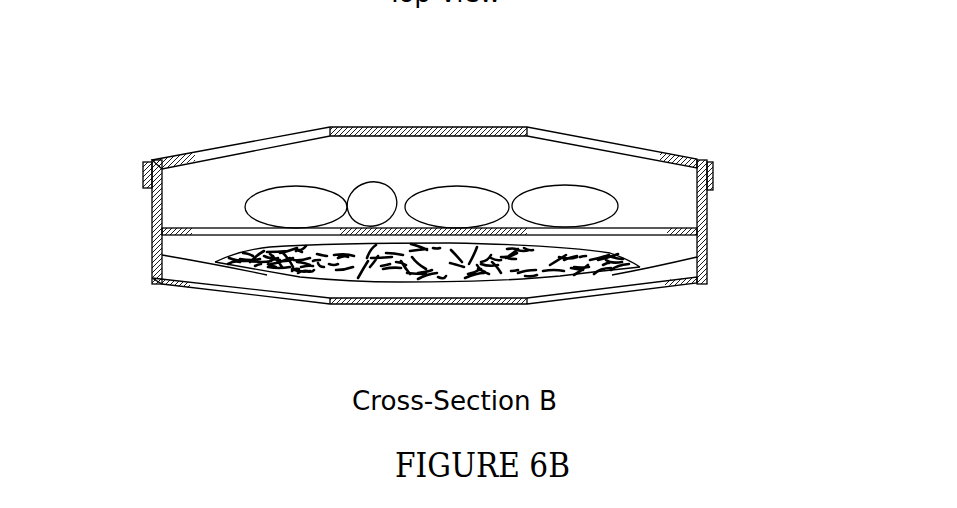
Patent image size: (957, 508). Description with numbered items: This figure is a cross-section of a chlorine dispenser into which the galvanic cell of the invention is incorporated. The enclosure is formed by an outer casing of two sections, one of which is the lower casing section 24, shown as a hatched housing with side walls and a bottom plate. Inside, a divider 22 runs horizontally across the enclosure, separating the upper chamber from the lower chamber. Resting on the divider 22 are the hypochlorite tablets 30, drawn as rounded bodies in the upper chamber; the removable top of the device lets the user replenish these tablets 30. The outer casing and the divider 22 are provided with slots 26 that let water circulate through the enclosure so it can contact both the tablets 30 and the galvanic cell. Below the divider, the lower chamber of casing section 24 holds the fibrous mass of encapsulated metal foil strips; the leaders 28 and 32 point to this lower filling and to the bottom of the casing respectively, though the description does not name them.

The divider 22 is at (510, 227).
The outer casing section 24 is at (690, 258).
The slots 26 is at (478, 127).
The absorbent fibrous material 28 is at (312, 272).
The hypochlorite tablets 30 is at (593, 190).
The bottom housing plate 32 is at (597, 297).